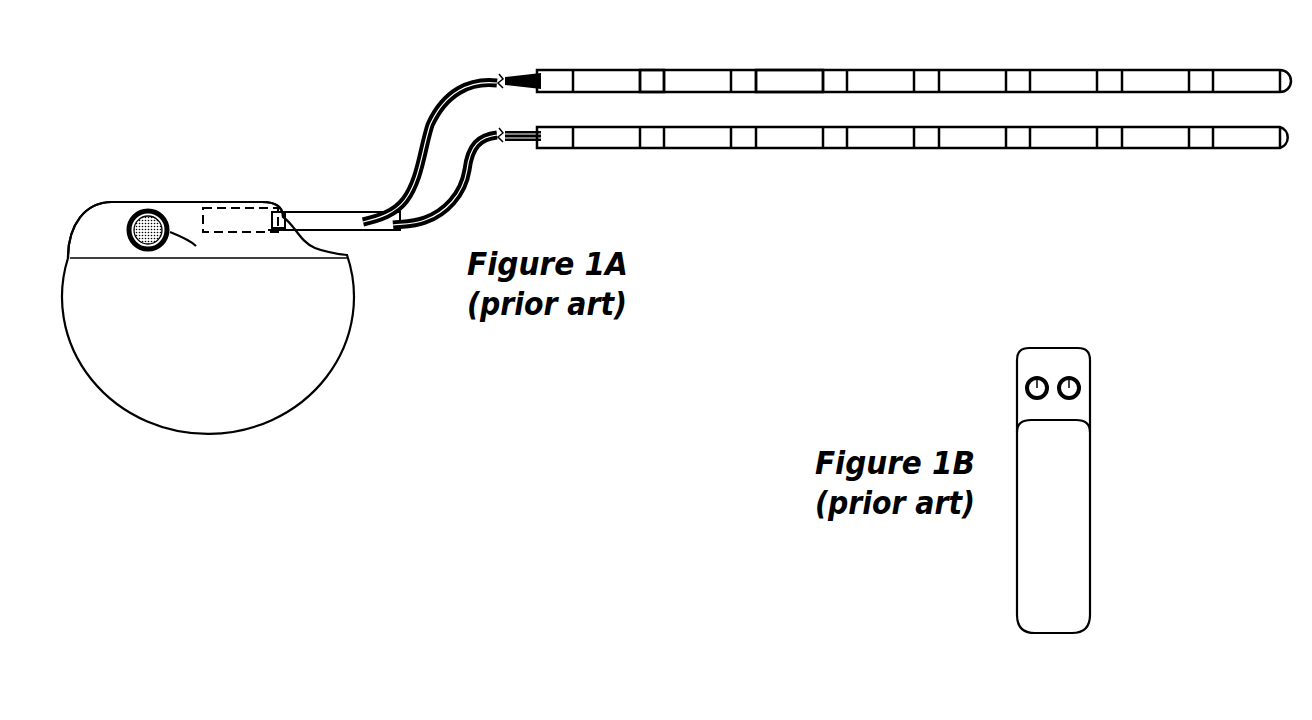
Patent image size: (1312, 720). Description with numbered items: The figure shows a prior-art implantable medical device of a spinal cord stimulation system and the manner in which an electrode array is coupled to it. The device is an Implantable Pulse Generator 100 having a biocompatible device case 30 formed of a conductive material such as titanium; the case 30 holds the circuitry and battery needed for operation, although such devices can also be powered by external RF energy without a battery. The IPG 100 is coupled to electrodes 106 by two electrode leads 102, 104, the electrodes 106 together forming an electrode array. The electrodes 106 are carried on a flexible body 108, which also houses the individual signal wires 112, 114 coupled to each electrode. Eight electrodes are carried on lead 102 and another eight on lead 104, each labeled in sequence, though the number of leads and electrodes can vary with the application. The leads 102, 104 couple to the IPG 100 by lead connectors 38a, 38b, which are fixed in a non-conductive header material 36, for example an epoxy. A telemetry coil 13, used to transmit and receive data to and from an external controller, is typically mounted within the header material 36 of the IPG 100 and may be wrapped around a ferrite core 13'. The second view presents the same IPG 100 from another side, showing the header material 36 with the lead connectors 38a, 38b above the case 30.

In FIG. 1A, the Implantable Pulse Generator (IPG) 100 is at (170, 112).
In FIG. 1B, the Implantable Pulse Generator (IPG) 100 is at (1053, 333).
In FIG. 1A, the electrode lead 102 is at (592, 50).
In FIG. 1A, the electrode lead 104 is at (634, 174).
In FIG. 1A, the electrodes 106 is at (792, 69).
In FIG. 1A, the flexible body 108 is at (653, 69).
In FIG. 1A, the signal wires 112 is at (445, 86).
In FIG. 1A, the signal wires 114 is at (482, 158).
In FIG. 1A, the header material 36 is at (101, 214).
In FIG. 1B, the header material 36 is at (1091, 400).
In FIG. 1A, the device case 30 is at (352, 315).
In FIG. 1B, the device case 30 is at (1091, 452).
In FIG. 1A, the telemetry coil 13 is at (147, 250).
In FIG. 1A, the ferrite core 13' is at (135, 209).
In FIG. 1B, the lead connector 38a is at (1035, 377).
In FIG. 1B, the lead connector 38b is at (1071, 377).